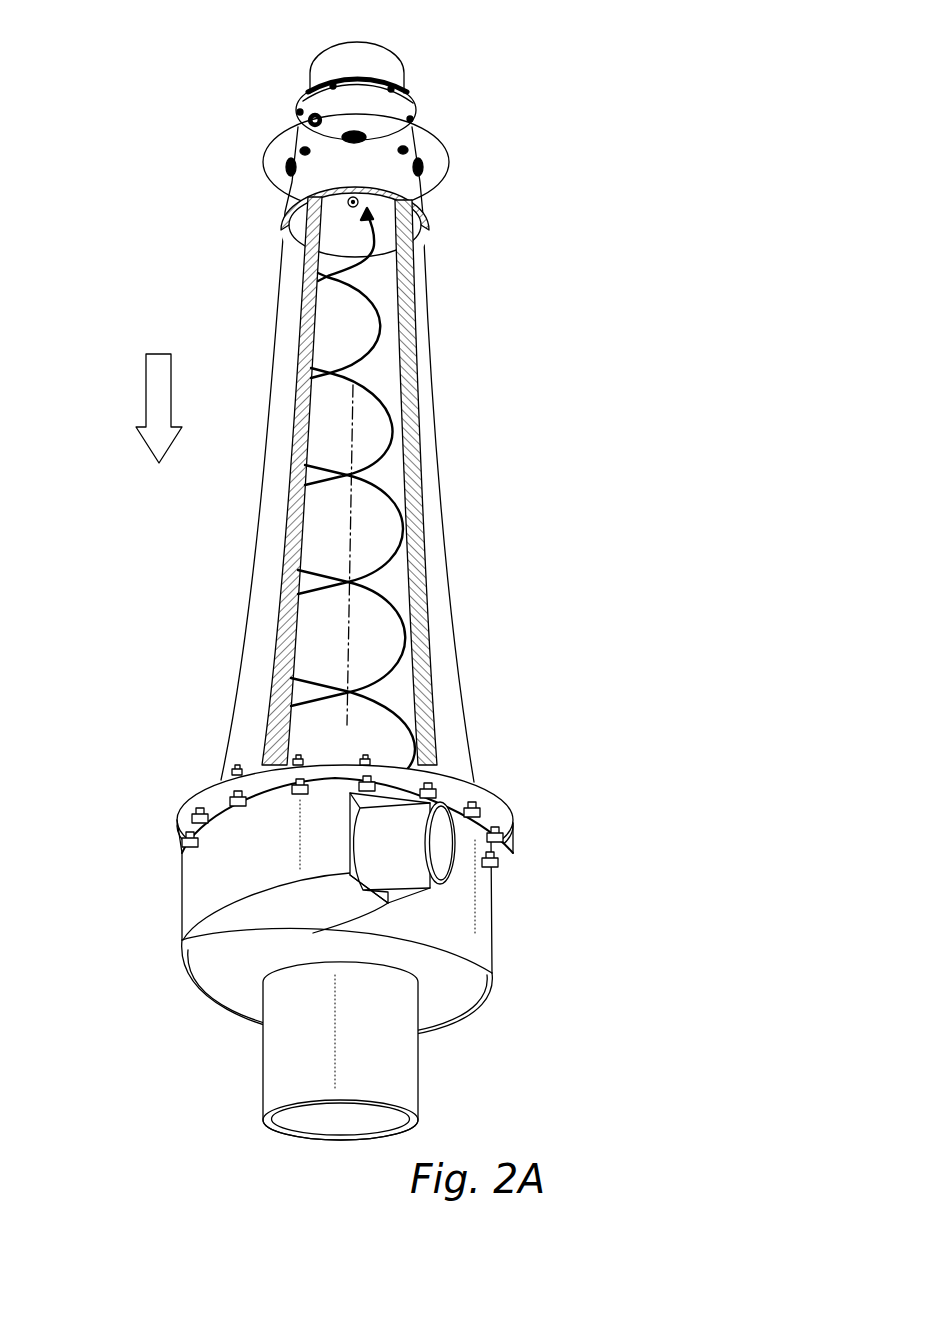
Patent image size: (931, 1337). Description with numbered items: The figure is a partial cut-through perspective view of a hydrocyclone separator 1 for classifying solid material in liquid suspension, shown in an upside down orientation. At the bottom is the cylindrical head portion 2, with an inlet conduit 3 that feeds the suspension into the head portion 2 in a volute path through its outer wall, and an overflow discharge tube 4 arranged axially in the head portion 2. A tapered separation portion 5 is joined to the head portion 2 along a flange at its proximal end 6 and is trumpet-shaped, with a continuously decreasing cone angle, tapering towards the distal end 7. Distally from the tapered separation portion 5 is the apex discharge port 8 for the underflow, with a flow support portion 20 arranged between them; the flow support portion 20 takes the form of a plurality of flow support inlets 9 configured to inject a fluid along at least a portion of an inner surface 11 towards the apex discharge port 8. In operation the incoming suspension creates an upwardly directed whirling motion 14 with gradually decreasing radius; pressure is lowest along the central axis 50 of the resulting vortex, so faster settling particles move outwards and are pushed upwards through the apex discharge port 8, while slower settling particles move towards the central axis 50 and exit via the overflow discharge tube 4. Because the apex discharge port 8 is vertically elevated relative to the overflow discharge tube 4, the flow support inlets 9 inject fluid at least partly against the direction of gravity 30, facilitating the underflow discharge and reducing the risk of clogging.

The hydrocyclone separator 1 is at (383, 591).
The head portion 2 is at (552, 889).
The inlet conduit 3 is at (397, 849).
The overflow discharge tube 4 is at (392, 1070).
The tapered separation portion 5 is at (427, 470).
The proximal end 6 is at (182, 736).
The distal end 7 is at (262, 296).
The apex discharge port 8 is at (405, 63).
The flow support inlets 9 is at (386, 204).
The inner surface 11 is at (336, 220).
The whirling motion 14 is at (400, 710).
The flow support portion 20 is at (438, 126).
The direction of gravity 30 is at (146, 386).
The central axis 50 is at (352, 430).